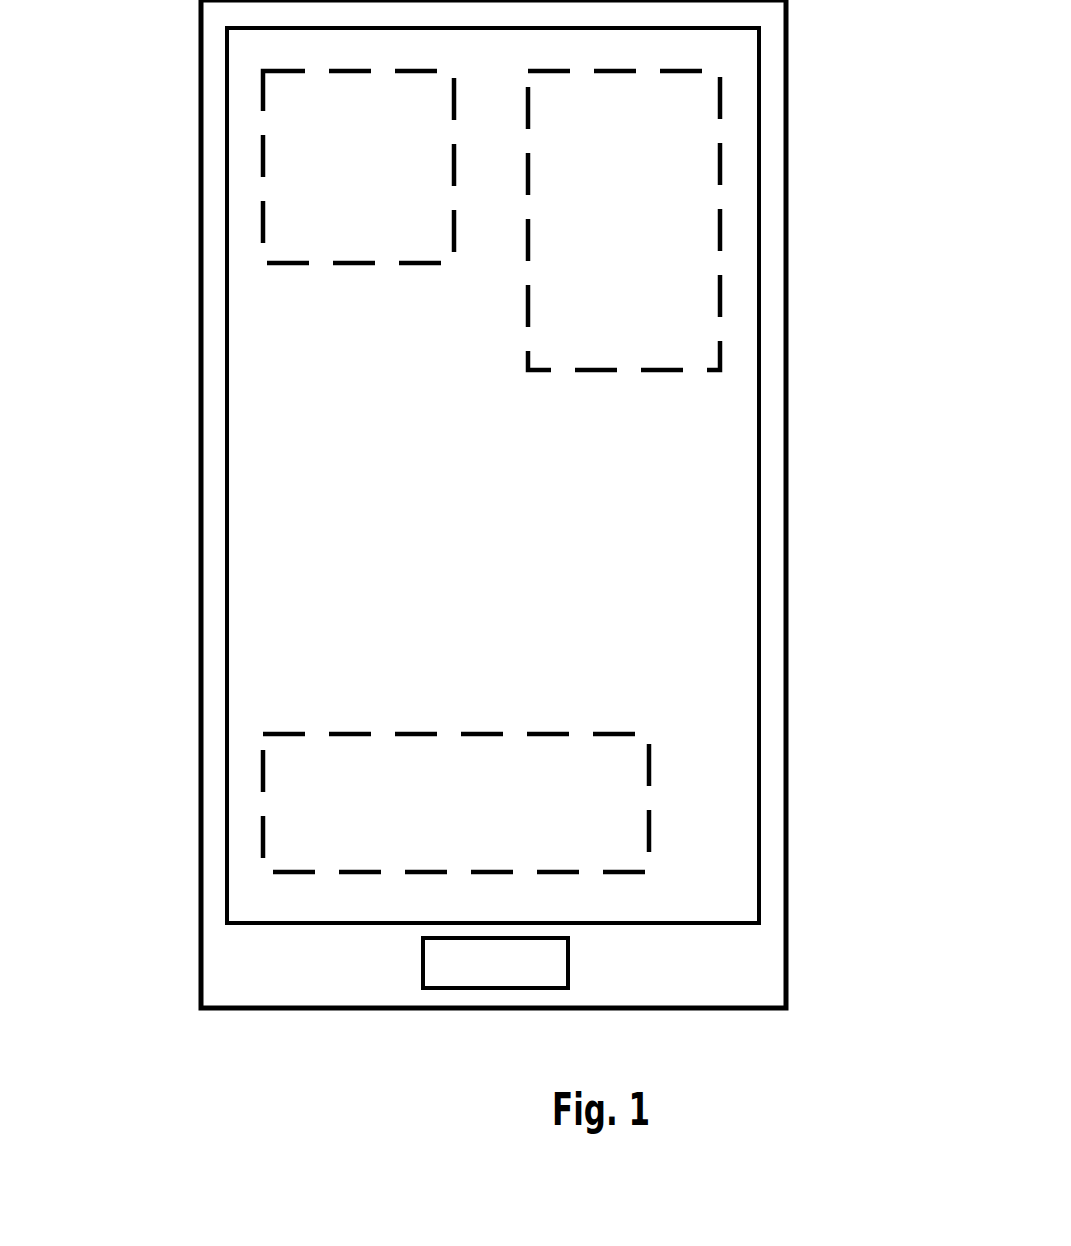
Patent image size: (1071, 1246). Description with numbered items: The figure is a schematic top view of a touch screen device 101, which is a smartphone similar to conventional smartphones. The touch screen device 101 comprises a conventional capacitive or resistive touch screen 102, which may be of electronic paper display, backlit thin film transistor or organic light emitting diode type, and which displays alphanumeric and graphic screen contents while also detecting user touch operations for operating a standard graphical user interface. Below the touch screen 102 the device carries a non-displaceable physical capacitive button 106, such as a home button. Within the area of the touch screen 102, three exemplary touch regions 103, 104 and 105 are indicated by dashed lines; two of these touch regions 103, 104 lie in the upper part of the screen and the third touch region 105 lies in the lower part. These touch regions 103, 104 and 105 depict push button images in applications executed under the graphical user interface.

The touch screen device 101 is at (787, 41).
The touch screen 102 is at (730, 417).
The touch region 103 is at (262, 190).
The touch region 104 is at (723, 223).
The touch region 105 is at (262, 776).
The physical capacitive button 106 is at (470, 976).